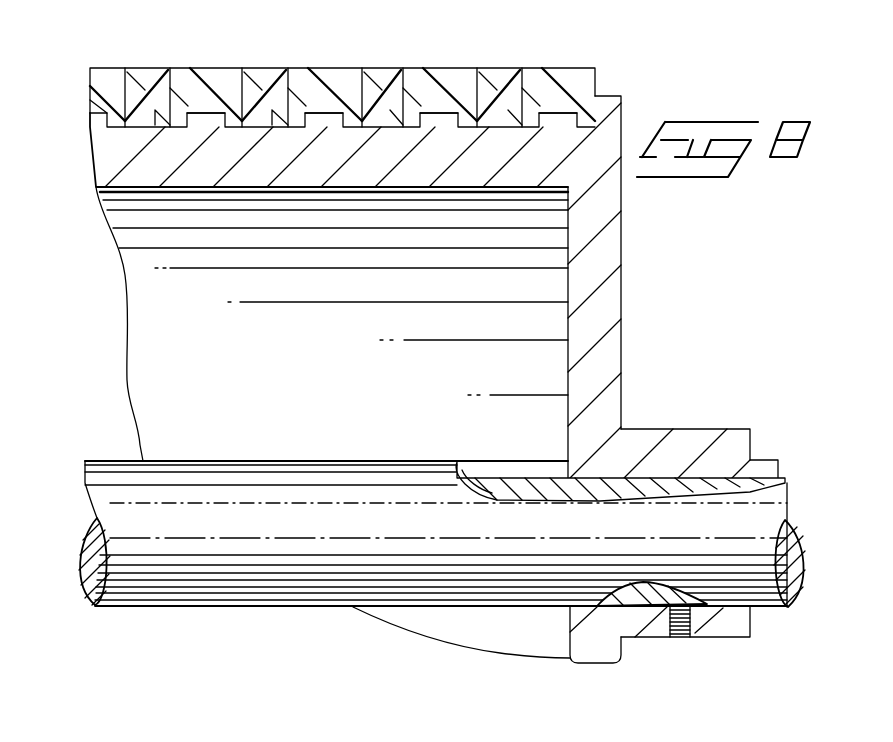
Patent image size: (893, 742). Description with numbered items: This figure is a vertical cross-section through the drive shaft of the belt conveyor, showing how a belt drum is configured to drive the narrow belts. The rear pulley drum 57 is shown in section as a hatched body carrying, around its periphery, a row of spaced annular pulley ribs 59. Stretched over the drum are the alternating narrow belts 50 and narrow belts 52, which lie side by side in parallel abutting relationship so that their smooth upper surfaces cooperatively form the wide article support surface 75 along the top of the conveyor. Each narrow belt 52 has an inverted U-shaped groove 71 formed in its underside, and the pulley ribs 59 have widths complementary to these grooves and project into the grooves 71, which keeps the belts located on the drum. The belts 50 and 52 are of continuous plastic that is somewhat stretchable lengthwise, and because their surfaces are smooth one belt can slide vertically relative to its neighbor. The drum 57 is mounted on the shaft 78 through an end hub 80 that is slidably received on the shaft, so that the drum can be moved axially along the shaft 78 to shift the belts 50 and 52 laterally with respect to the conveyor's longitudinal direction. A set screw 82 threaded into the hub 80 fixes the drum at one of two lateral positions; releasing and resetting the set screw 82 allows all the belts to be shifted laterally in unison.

The wide article support surface 75 is at (333, 64).
The narrow belt 52 is at (90, 85).
The narrow belt 50 is at (323, 97).
The inverted U-shaped groove 71 is at (342, 114).
The annular pulley rib 59 is at (88, 120).
The rear pulley drum 57 is at (618, 250).
The end hub 80 is at (690, 442).
The shaft 78 is at (263, 468).
The set screw 82 is at (688, 640).